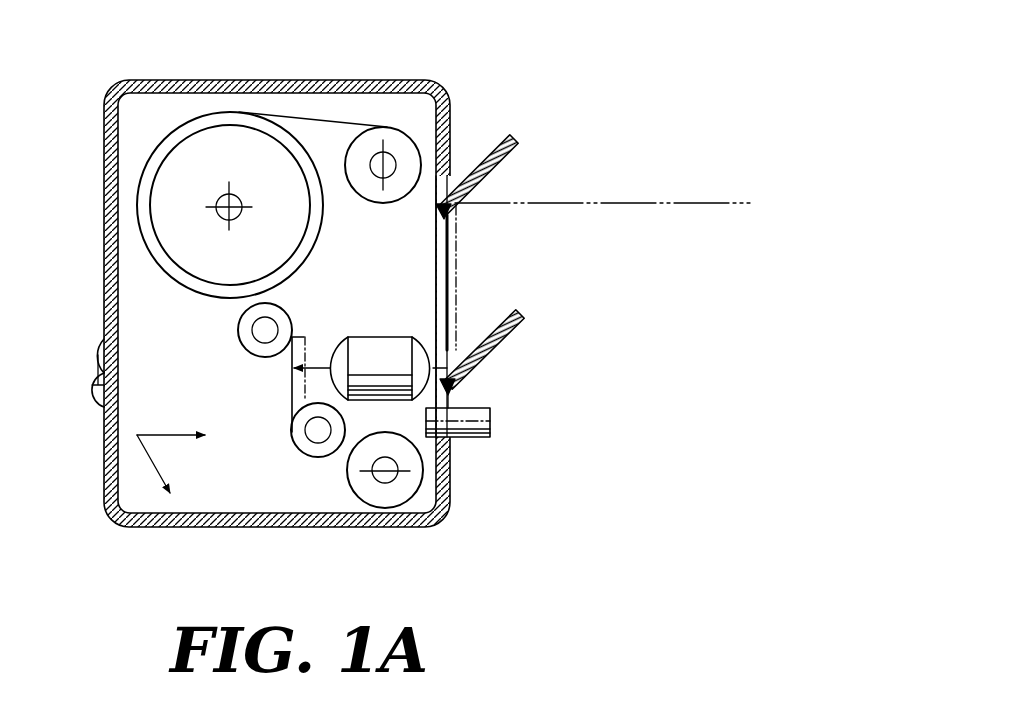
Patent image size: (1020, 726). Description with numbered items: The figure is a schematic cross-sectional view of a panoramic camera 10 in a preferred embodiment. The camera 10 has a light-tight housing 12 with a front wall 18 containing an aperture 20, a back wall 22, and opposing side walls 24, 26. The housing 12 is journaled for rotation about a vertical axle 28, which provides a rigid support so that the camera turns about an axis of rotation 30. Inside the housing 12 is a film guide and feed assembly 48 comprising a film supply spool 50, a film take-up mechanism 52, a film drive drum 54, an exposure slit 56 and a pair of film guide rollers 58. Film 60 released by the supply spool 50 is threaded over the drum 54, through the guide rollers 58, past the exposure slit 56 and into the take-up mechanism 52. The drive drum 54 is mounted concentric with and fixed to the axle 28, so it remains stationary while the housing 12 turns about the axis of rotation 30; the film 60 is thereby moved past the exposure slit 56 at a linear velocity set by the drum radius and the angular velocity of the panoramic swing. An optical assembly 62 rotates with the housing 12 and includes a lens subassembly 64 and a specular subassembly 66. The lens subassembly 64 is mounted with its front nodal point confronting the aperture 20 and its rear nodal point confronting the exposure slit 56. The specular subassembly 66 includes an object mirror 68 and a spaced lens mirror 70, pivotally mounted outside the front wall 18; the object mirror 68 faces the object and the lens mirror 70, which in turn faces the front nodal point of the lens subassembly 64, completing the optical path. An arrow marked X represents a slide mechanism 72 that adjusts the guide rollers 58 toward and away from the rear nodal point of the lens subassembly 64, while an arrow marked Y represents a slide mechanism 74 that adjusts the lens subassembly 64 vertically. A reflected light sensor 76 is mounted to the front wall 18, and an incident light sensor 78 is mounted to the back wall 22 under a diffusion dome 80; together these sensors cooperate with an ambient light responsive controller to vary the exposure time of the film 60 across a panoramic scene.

The panoramic camera 10 is at (115, 556).
The housing 12 is at (450, 121).
The front wall 18 is at (444, 256).
The aperture 20 is at (452, 345).
The back wall 22 is at (104, 262).
The side wall 24 is at (285, 80).
The side wall 26 is at (321, 527).
The vertical axle 28 is at (222, 218).
The axis of rotation 30 is at (232, 185).
The film guide and feed assembly 48 is at (344, 258).
The film supply spool 50 is at (383, 127).
The film take-up mechanism 52 is at (421, 490).
The film drive drum 54 is at (175, 124).
The exposure slit 56 is at (296, 340).
The film guide rollers 58 is at (240, 336).
The film 60 is at (318, 128).
The optical assembly 62 is at (553, 187).
The lens subassembly 64 is at (363, 337).
The specular subassembly 66 is at (501, 358).
The object mirror 68 is at (515, 140).
The lens mirror 70 is at (521, 318).
The slide mechanism (X) 72 is at (177, 434).
The slide mechanism (Y) 74 is at (157, 467).
The reflected light sensor 76 is at (478, 437).
The incident light sensor 78 is at (70, 393).
The diffusion dome 80 is at (72, 348).